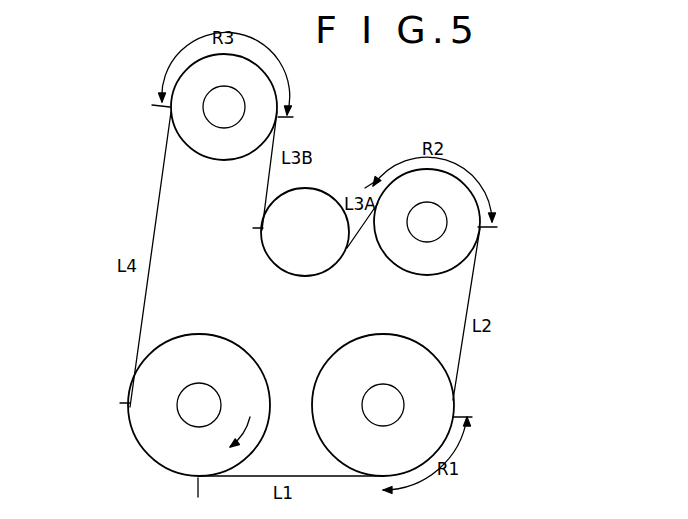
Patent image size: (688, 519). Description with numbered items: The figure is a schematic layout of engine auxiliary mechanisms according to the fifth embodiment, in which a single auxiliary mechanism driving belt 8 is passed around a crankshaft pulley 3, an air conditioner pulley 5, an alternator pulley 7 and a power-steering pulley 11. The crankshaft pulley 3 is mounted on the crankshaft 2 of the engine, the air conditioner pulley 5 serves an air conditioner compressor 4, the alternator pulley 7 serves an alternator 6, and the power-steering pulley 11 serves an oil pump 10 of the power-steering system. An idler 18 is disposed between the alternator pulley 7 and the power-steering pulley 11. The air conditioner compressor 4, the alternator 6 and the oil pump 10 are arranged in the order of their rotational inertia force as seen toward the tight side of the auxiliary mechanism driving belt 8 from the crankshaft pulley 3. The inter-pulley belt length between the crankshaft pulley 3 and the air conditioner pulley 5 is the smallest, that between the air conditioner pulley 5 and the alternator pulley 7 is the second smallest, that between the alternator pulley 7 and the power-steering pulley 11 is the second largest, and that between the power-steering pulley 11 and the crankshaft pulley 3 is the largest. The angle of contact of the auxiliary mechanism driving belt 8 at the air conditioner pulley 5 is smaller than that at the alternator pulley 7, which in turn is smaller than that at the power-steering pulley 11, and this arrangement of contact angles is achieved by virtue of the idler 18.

The crankshaft 2 is at (203, 398).
The crankshaft pulley 3 is at (147, 427).
The air conditioner compressor 4 is at (382, 397).
The air conditioner pulley 5 is at (357, 347).
The alternator 6 is at (437, 232).
The alternator pulley 7 is at (397, 252).
The auxiliary mechanism driving belt 8 is at (150, 282).
The oil pump 10 is at (210, 110).
The power-steering pulley 11 is at (200, 140).
The idler 18 is at (322, 198).